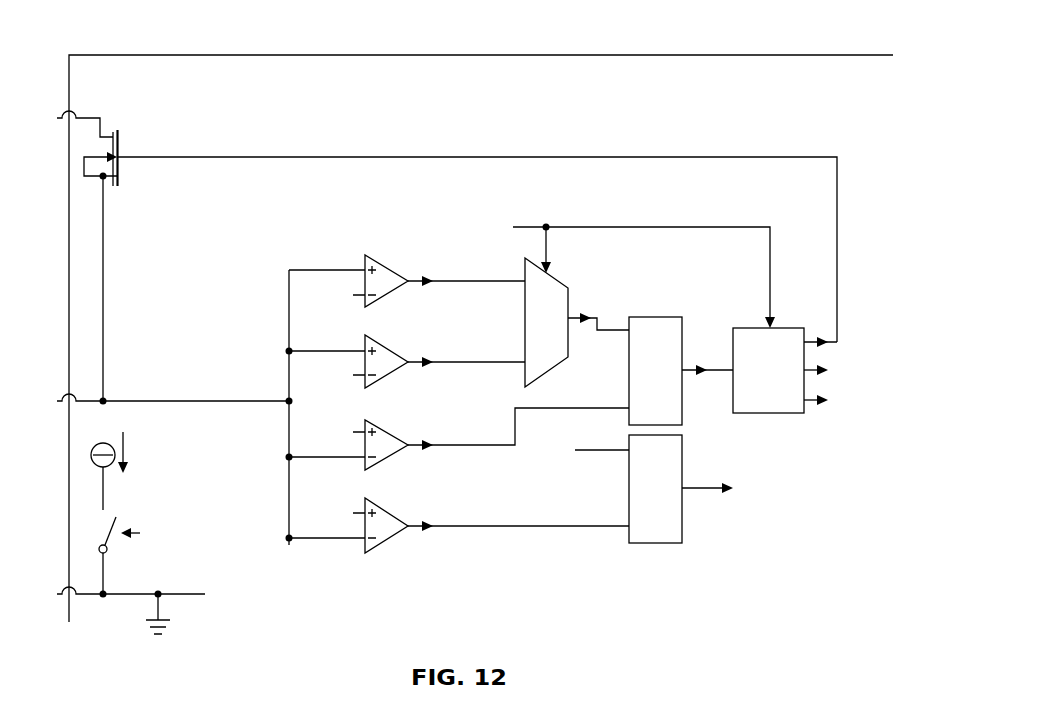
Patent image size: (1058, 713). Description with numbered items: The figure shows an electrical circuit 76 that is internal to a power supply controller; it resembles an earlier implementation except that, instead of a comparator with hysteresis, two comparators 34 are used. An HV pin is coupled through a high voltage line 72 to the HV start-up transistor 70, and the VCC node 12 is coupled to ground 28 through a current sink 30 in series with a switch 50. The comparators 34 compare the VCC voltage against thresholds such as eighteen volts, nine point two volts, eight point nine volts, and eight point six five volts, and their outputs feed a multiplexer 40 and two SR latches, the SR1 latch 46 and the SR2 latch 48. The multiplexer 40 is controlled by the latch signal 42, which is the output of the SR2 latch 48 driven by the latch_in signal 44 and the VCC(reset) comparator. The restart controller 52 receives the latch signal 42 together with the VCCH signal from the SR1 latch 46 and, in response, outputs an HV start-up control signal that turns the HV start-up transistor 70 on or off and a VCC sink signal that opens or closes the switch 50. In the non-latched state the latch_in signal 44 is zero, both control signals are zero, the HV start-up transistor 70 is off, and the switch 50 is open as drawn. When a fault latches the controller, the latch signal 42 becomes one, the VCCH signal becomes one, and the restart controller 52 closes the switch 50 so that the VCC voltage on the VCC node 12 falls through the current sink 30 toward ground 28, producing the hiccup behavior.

The electrical circuit 76 is at (838, 24).
The high voltage line 72 is at (88, 118).
The HV start-up transistor 70 is at (120, 180).
The VCC supply node 12 is at (90, 400).
The current sink 30 is at (92, 454).
The switch 50 is at (113, 537).
The ground 28 is at (110, 597).
The comparators 34 is at (380, 255).
The multiplexer 40 is at (570, 305).
The latch signal 42 is at (548, 237).
The SR latch SR1 46 is at (655, 317).
The latch input signal 44 is at (575, 452).
The SR latch SR2 48 is at (655, 543).
The restart controller 52 is at (779, 328).